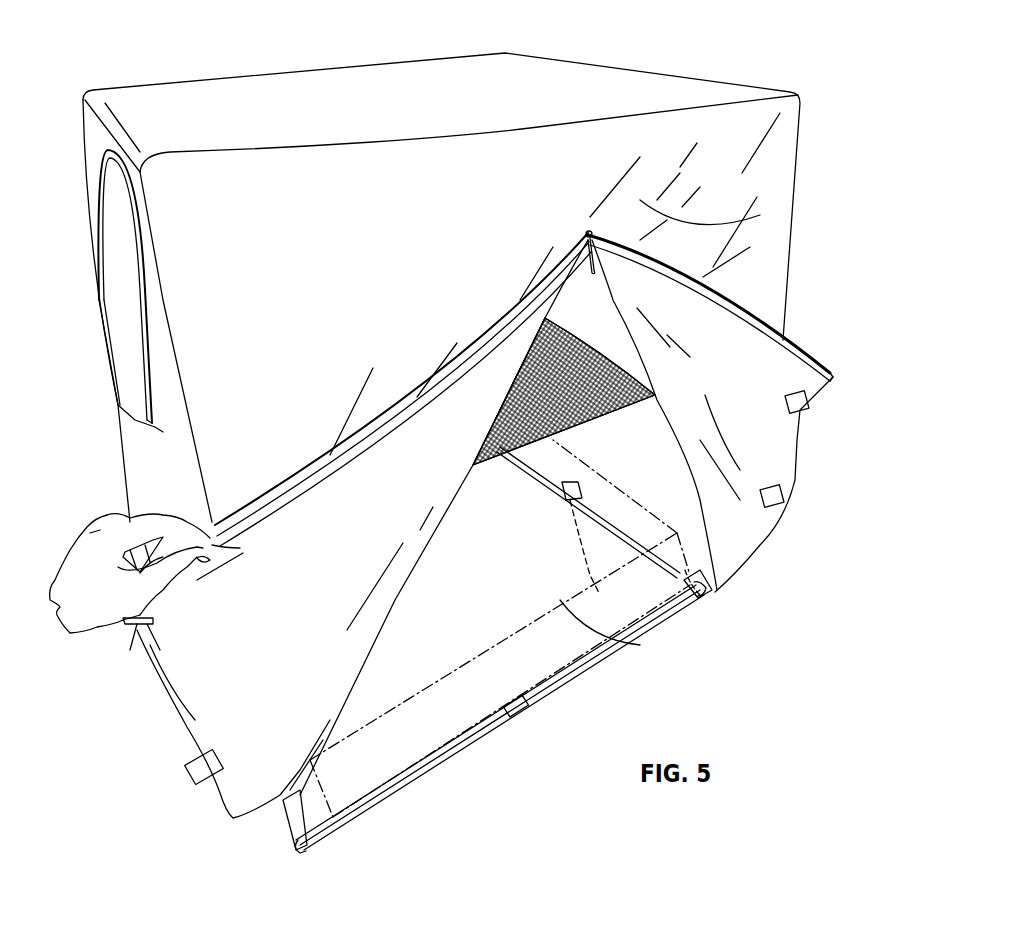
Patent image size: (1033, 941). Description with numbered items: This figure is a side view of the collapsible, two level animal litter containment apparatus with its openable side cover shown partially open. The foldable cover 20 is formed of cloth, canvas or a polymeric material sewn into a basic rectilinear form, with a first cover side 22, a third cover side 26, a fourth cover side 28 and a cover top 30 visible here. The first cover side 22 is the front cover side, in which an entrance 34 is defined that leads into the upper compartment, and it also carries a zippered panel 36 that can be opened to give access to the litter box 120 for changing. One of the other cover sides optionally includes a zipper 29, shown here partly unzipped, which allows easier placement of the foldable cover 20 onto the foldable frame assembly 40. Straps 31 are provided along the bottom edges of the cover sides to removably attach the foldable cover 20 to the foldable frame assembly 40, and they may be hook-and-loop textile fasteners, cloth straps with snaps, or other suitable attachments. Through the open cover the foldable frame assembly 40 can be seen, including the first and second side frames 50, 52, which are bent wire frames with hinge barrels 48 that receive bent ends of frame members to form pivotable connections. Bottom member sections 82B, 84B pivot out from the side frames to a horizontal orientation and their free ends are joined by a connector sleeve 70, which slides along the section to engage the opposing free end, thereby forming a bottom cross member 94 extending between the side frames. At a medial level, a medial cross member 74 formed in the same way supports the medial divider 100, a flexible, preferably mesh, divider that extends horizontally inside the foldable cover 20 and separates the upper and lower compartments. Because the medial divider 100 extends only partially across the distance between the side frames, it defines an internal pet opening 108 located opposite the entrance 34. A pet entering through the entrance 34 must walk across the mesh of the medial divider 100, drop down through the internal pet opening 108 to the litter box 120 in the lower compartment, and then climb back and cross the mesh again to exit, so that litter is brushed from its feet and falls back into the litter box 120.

The foldable cover 20 is at (715, 78).
The first cover side 22 is at (157, 434).
The third cover side 26 is at (808, 165).
The fourth cover side 28 is at (360, 238).
The zipper 29 is at (793, 350).
The cover top 30 is at (448, 101).
The straps 31 is at (800, 405).
The entrance 34 is at (118, 258).
The zippered panel 36 is at (137, 476).
The foldable frame assembly 40 is at (500, 651).
The hinge barrels 48 is at (305, 825).
The first side frame 50 is at (290, 815).
The second side frame 52 is at (725, 583).
The connector sleeve 70 is at (525, 712).
The medial cross member 74 is at (490, 466).
The bottom member section 82B is at (415, 742).
The bottom member section 84B is at (565, 632).
The bottom cross member 94 is at (370, 816).
The medial divider 100 is at (630, 350).
The internal pet opening 108 is at (597, 308).
The litter box 120 is at (590, 620).